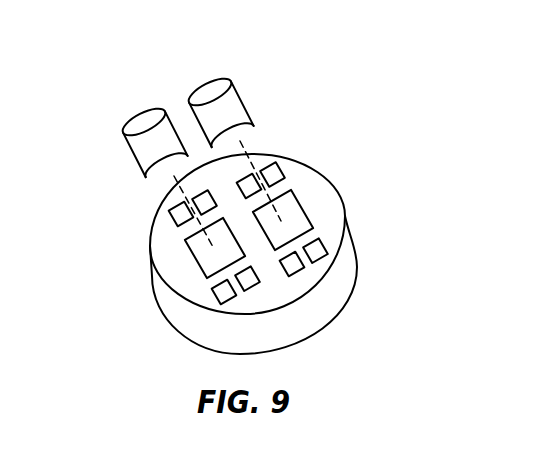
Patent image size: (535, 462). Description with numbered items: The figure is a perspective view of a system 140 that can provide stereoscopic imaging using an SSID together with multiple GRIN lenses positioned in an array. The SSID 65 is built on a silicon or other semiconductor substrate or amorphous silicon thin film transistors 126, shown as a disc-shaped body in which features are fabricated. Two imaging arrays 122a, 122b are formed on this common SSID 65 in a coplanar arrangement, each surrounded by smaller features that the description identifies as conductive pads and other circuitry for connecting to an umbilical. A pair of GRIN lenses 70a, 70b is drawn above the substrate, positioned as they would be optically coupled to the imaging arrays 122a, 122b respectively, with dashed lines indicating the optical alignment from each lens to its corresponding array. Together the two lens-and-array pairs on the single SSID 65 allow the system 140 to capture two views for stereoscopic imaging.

The system 140 is at (96, 88).
The GRIN lens 70a is at (146, 150).
The GRIN lens 70b is at (228, 108).
The SSID 65 is at (267, 254).
The semiconductor substrate or amorphous silicon thin film transistors 126 is at (325, 302).
The imaging array 122a is at (205, 250).
The imaging array 122b is at (290, 216).